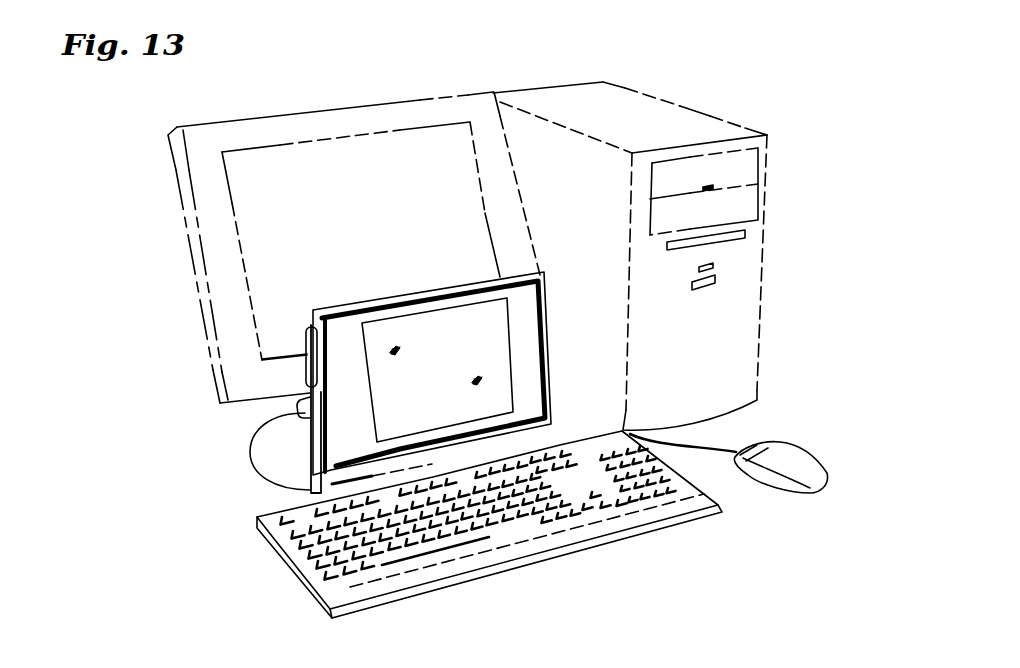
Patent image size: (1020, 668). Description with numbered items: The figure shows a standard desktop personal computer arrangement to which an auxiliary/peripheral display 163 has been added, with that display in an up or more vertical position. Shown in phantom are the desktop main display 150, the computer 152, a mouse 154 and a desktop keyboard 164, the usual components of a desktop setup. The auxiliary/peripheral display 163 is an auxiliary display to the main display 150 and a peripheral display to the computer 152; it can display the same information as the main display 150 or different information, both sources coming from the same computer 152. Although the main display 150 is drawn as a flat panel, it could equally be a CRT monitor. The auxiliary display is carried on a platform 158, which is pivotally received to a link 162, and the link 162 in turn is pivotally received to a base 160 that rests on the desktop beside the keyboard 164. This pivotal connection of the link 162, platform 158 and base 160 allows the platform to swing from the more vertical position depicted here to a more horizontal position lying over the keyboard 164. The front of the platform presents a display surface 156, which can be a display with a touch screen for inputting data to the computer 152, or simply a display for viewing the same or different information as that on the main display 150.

The main display 150 is at (367, 102).
The computer 152 is at (693, 112).
The mouse 154 is at (793, 442).
The display surface 156 is at (400, 413).
The platform 158 is at (300, 430).
The base 160 is at (300, 408).
The link 162 is at (307, 367).
The auxiliary/peripheral display 163 is at (298, 307).
The desktop keyboard 164 is at (617, 540).